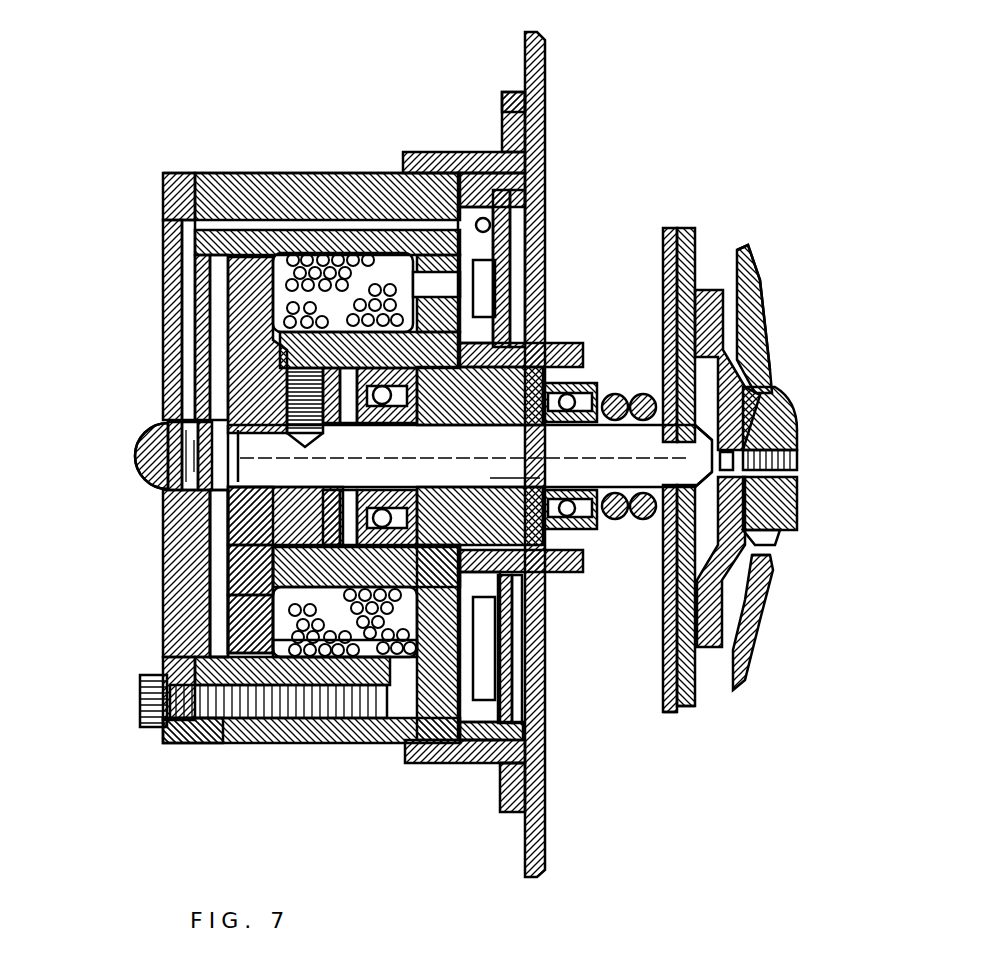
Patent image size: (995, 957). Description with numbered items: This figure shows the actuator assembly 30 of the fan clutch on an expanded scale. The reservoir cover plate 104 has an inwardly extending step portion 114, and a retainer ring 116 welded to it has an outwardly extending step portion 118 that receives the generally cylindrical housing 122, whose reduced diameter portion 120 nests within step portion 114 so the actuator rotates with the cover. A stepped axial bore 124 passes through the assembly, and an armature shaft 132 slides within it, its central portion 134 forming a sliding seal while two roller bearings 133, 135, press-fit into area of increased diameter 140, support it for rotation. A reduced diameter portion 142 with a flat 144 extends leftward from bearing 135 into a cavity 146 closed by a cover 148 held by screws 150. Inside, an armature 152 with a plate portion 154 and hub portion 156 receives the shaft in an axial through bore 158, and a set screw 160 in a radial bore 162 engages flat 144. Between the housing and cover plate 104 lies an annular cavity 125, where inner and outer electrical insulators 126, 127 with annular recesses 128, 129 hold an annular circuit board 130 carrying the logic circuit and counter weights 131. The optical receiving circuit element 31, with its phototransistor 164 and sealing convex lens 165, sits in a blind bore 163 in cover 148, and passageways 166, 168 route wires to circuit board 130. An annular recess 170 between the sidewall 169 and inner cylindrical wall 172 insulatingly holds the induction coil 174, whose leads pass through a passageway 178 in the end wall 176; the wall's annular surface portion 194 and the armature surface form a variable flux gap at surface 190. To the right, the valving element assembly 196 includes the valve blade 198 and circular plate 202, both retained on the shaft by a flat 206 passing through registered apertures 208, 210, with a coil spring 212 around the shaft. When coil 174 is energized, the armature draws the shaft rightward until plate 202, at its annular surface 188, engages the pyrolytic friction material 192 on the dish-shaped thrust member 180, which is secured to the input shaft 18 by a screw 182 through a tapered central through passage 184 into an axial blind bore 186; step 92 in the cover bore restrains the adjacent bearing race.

The input shaft 18 is at (775, 390).
The actuator assembly 30 is at (180, 170).
The optical receiving circuit element 31 is at (135, 470).
The step 92 is at (760, 330).
The reservoir cover plate 104 is at (545, 50).
The step portion 114 is at (560, 345).
The retainer ring 116 is at (505, 92).
The step portion 118 is at (478, 150).
The reduced diameter portion 120 is at (595, 368).
The housing 122 is at (380, 173).
The stepped axial bore 124 is at (495, 480).
The annular cavity 125 is at (470, 765).
The inner electrical insulator 126 is at (545, 585).
The outer electrical insulator 127 is at (540, 735).
The annular recess 128 is at (545, 625).
The annular recess 129 is at (490, 765).
The circuit board 130 is at (520, 680).
The counter weights 131 is at (420, 763).
The armature shaft 132 is at (400, 460).
The roller bearing 133 is at (605, 372).
The central portion 134 is at (470, 425).
The roller bearing 135 is at (400, 520).
The area of increased diameter 140 is at (393, 570).
The reduced diameter portion 142 is at (340, 440).
The flat 144 is at (257, 345).
The cavity 146 is at (215, 270).
The cover 148 is at (200, 740).
The screws 150 is at (140, 705).
The armature 152 is at (255, 560).
The plate portion 154 is at (240, 670).
The hub portion 156 is at (262, 514).
The axial through bore 158 is at (245, 530).
The set screw 160 is at (287, 395).
The bore 162 is at (250, 360).
The blind bore 163 is at (205, 505).
The phototransistor 164 is at (150, 430).
The convex lens 165 is at (180, 455).
The passageway 166 is at (320, 232).
The passageway 168 is at (188, 225).
The sidewall 169 is at (222, 743).
The annular recess 170 is at (405, 650).
The inner cylindrical wall 172 is at (240, 620).
The induction coil 174 is at (395, 680).
The end wall 176 is at (525, 215).
The passageway 178 is at (500, 262).
The thrust member 180 is at (760, 620).
The screw 182 is at (790, 432).
The tapered central through passage 184 is at (797, 497).
The axial blind bore 186 is at (797, 460).
The annular surface 188 is at (700, 675).
The surface 190 is at (210, 600).
The friction material 192 is at (690, 320).
The annular surface portion 194 is at (205, 330).
The valving element assembly 196 is at (672, 224).
The valve blade 198 is at (670, 712).
The circular plate 202 is at (688, 708).
The flat 206 is at (665, 400).
The aperture 208 is at (690, 460).
The aperture 210 is at (685, 470).
The coil spring 212 is at (643, 518).